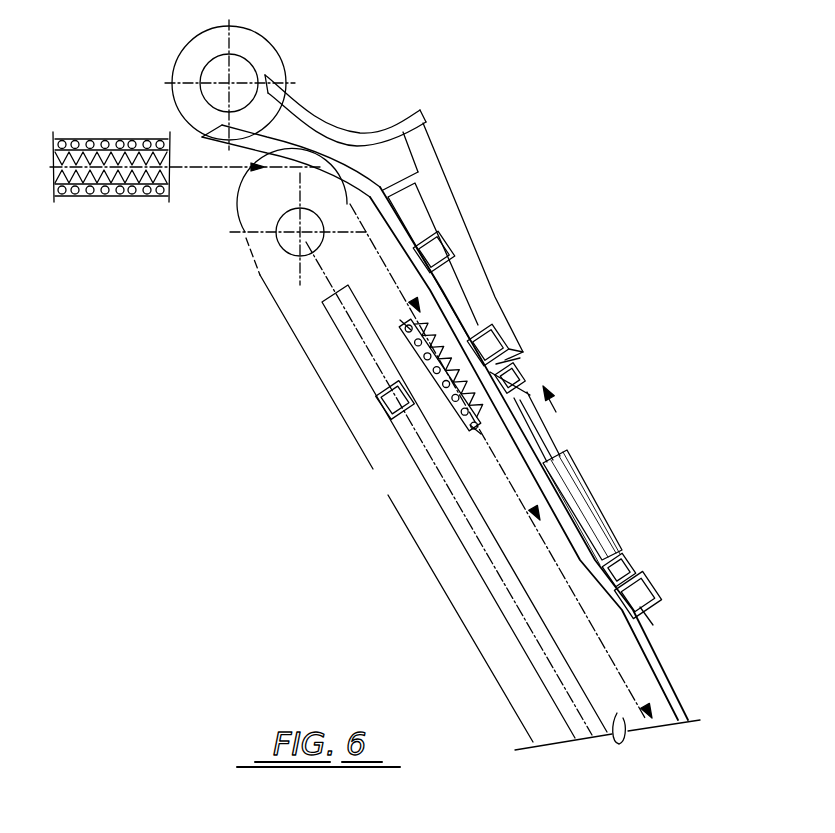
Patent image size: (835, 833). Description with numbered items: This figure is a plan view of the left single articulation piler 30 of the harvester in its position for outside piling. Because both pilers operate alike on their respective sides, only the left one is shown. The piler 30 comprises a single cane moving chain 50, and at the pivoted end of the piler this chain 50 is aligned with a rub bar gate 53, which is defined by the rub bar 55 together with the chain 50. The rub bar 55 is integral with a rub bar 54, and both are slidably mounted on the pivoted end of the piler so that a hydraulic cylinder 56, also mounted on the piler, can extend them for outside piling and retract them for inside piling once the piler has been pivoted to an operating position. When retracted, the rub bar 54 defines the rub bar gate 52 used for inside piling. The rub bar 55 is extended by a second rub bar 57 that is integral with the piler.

The single articulation piler 30 is at (358, 463).
The cane moving chain 50 is at (473, 431).
The rub bar gate 52 is at (361, 124).
The rub bar gate 53 is at (268, 181).
The rub bar 54 is at (422, 124).
The rub bar 55 is at (245, 151).
The hydraulic cylinder 56 is at (596, 503).
The second rub bar 57 is at (688, 711).